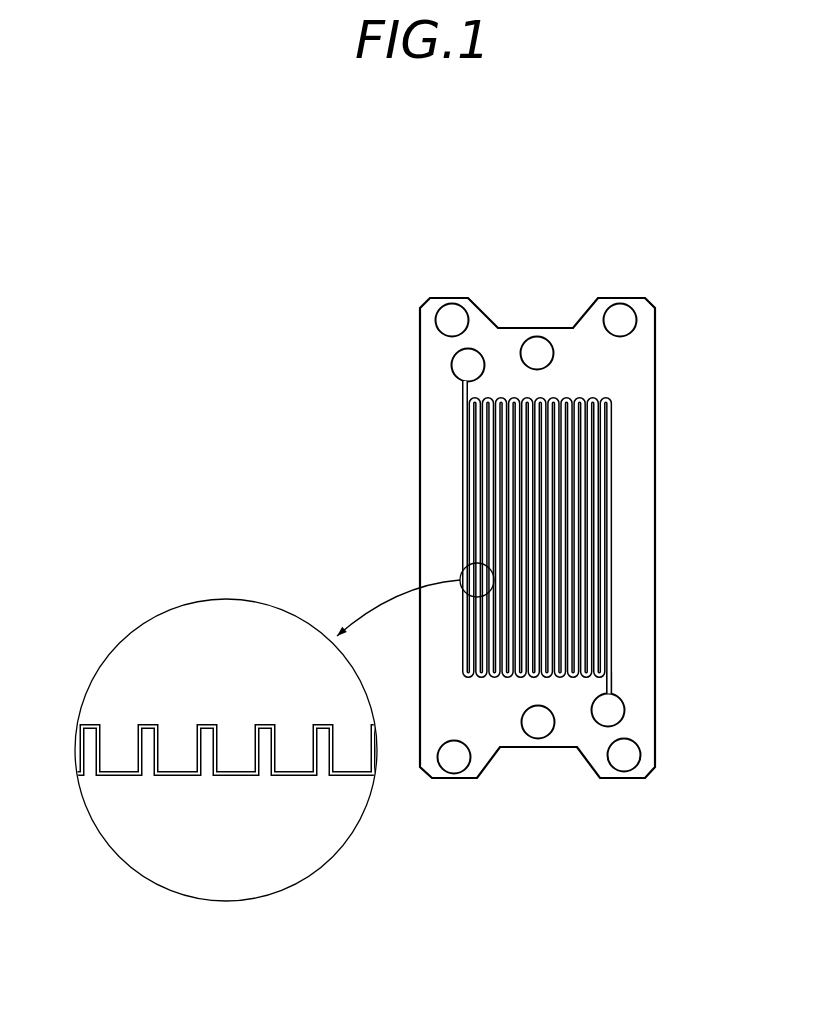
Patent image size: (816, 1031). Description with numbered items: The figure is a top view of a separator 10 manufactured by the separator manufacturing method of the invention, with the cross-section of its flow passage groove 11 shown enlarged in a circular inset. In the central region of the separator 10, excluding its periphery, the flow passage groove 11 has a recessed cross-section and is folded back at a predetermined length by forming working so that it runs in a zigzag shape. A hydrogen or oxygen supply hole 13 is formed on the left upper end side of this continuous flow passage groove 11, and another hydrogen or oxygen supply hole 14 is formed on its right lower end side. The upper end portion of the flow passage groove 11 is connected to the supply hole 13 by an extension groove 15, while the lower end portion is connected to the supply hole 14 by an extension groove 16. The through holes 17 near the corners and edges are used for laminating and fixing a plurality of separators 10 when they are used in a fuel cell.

The separator 10 is at (656, 226).
The flow passage groove 11 is at (616, 419).
The hydrogen or oxygen supply hole 13 is at (460, 364).
The hydrogen or oxygen supply hole 14 is at (615, 720).
The extension groove 15 is at (461, 390).
The extension groove 16 is at (617, 696).
The through holes 17 is at (535, 350).